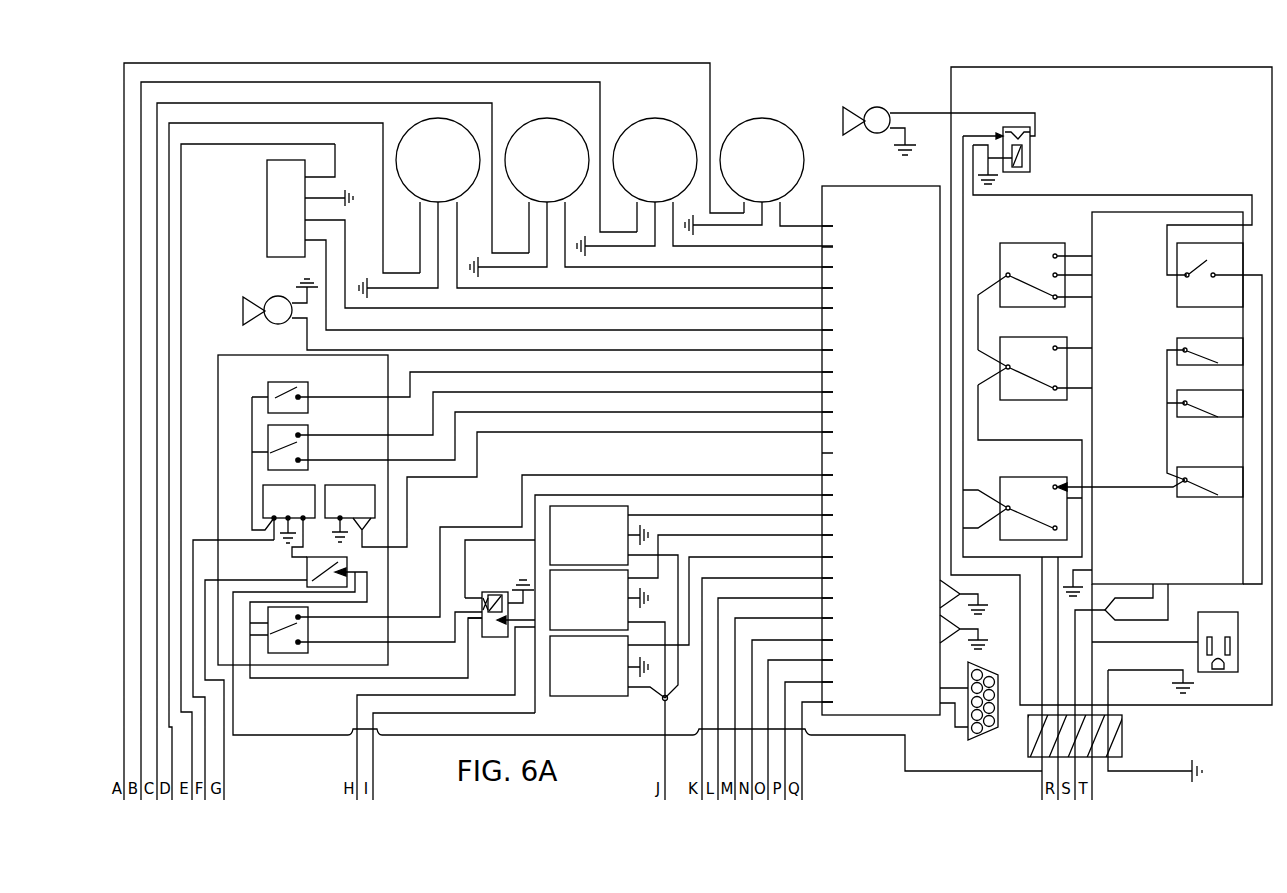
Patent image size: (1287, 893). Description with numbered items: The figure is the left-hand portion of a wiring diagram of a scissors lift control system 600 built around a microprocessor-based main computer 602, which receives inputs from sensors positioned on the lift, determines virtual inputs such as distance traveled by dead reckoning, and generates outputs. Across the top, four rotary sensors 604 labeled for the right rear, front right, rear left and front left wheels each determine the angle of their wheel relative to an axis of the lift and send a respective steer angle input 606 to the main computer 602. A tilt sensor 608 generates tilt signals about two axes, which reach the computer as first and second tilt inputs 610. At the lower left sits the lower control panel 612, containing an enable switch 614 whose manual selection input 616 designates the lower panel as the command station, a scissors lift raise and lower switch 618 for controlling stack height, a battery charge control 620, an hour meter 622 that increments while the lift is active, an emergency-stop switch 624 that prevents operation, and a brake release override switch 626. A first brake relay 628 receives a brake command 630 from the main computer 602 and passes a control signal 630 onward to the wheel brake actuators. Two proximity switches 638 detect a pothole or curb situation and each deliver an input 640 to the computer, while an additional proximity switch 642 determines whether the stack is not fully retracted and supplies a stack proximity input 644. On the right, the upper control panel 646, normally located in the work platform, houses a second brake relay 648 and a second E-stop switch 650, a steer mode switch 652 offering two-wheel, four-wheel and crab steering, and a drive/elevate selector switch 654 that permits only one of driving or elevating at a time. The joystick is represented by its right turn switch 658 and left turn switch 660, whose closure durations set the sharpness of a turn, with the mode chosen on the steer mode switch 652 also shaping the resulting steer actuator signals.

The scissors lift control system 600 is at (847, 70).
The main computer 602 is at (881, 450).
The rotary sensors 604 is at (459, 124).
The steer angle input 606 is at (838, 220).
The tilt sensor 608 is at (282, 213).
The first and second tilt inputs 610 is at (838, 305).
The lower control panel 612 is at (243, 355).
The enable switch 614 is at (268, 392).
The manual selection input 616 is at (828, 371).
The scissors lift raise and lower switch 618 is at (310, 435).
The battery charge control 620 is at (289, 521).
The hour meter 622 is at (579, 489).
The emergency-stop switch 624 is at (307, 572).
The brake release override switch 626 is at (310, 637).
The first brake relay 628 is at (487, 590).
The brake command / control signal 630 is at (828, 494).
The proximity switches 638 is at (691, 602).
The input 640 is at (838, 510).
The additional proximity switch 642 is at (691, 678).
The stack proximity input 644 is at (828, 557).
The upper control panel 646 is at (1200, 66).
The second brake relay 648 is at (1031, 157).
The second E-stop switch 650 is at (1074, 498).
The steer mode switch 652 is at (1065, 287).
The drive/elevate selector switch 654 is at (1024, 401).
The right turn switch 658 is at (1222, 343).
The left turn switch 660 is at (1222, 416).